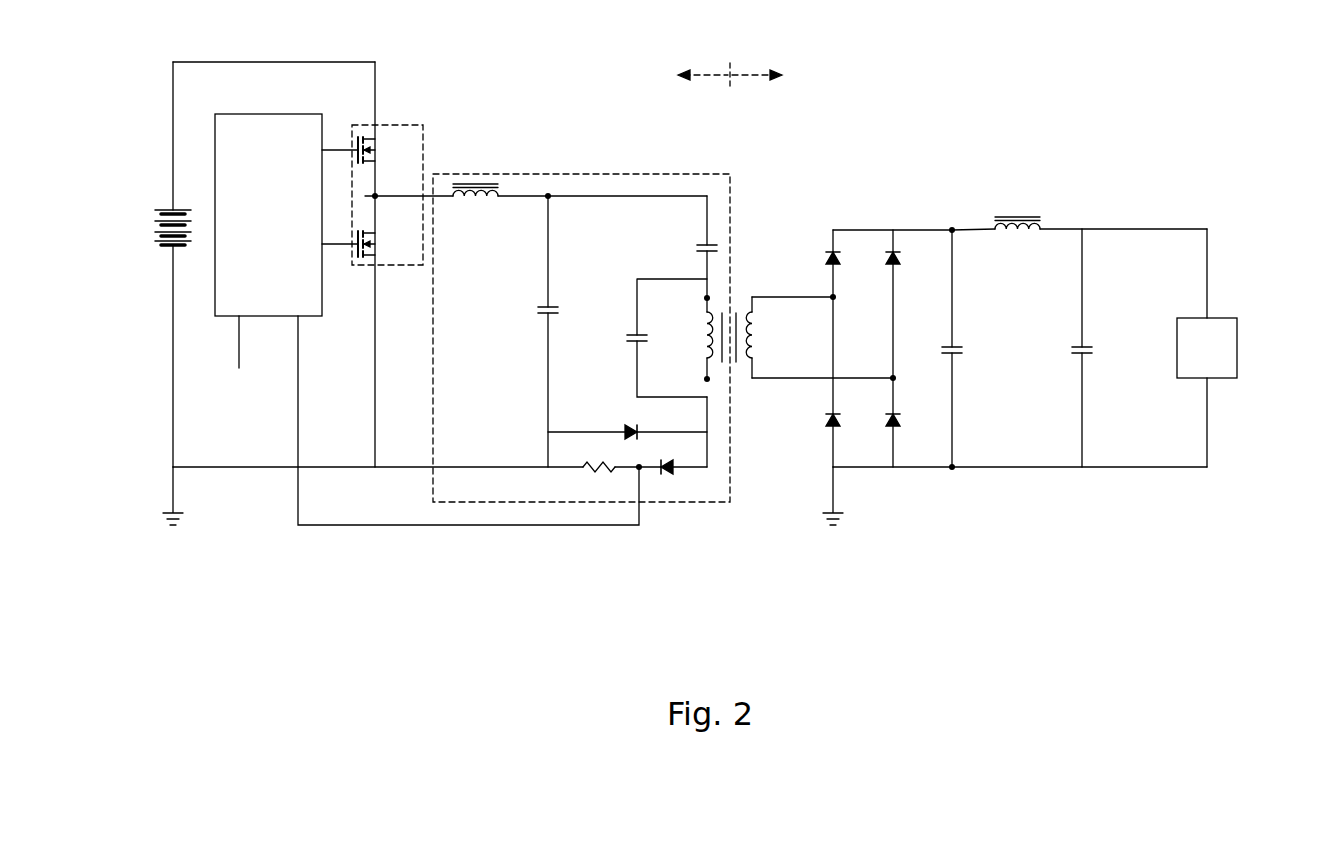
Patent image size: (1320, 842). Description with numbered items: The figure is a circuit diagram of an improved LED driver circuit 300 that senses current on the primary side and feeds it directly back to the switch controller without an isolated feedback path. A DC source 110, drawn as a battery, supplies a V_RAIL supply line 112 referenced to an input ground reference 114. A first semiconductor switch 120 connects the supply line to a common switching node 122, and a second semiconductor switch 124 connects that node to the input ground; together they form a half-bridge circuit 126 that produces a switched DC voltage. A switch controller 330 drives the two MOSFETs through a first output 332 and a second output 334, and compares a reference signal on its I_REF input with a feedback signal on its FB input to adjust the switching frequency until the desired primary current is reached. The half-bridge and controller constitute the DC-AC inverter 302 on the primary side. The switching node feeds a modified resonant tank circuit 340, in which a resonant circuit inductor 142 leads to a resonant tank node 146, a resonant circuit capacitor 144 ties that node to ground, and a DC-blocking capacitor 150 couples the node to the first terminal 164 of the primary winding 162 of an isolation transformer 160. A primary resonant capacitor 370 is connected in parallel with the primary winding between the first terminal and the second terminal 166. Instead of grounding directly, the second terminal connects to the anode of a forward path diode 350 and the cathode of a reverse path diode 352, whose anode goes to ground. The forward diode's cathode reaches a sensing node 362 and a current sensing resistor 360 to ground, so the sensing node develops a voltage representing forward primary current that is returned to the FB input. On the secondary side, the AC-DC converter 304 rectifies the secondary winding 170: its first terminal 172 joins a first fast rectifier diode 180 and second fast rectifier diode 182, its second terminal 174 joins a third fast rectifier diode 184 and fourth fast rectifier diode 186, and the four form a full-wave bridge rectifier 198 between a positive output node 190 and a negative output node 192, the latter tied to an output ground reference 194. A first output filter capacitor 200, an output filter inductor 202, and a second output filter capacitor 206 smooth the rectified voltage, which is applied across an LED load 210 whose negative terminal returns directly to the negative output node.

The DC source 110 is at (178, 208).
The V_RAIL supply line 112 is at (275, 63).
The input ground reference 114 is at (176, 517).
The first semiconductor switch 120 is at (366, 158).
The common switching node 122 is at (378, 196).
The second semiconductor switch 124 is at (366, 253).
The half-bridge circuit 126 is at (382, 125).
The resonant circuit inductor 142 is at (488, 200).
The resonant circuit capacitor 144 is at (542, 310).
The resonant tank node 146 is at (553, 199).
The DC-blocking capacitor 150 is at (704, 245).
The isolation transformer 160 is at (739, 294).
The primary winding 162 is at (705, 354).
The first terminal of the primary winding 164 is at (705, 298).
The second terminal of the primary winding 166 is at (705, 379).
The secondary winding 170 is at (753, 340).
The first terminal of the secondary winding 172 is at (836, 298).
The second terminal of the secondary winding 174 is at (891, 378).
The first fast rectifier diode 180 is at (829, 266).
The second fast rectifier diode 182 is at (830, 428).
The third fast rectifier diode 184 is at (889, 266).
The fourth fast rectifier diode 186 is at (890, 428).
The positive output node 190 is at (950, 233).
The negative output node 192 is at (950, 464).
The output ground reference 194 is at (838, 517).
The full-wave bridge rectifier 198 is at (863, 228).
The first output filter capacitor 200 is at (958, 354).
The output filter inductor 202 is at (1016, 219).
The second output filter capacitor 206 is at (1076, 352).
The LED load 210 is at (1196, 380).
The LED driver circuit 300 is at (1128, 153).
The DC-AC inverter 302 is at (661, 163).
The AC-DC converter 304 is at (797, 163).
The switch controller 330 is at (286, 225).
The first output 332 is at (325, 149).
The second output 334 is at (325, 245).
The modified resonant tank circuit 340 is at (470, 174).
The forward path diode 350 is at (670, 469).
The reverse path diode 352 is at (624, 432).
The current sensing resistor 360 is at (600, 464).
The sensing node 362 is at (636, 471).
The primary resonant capacitor 370 is at (634, 335).